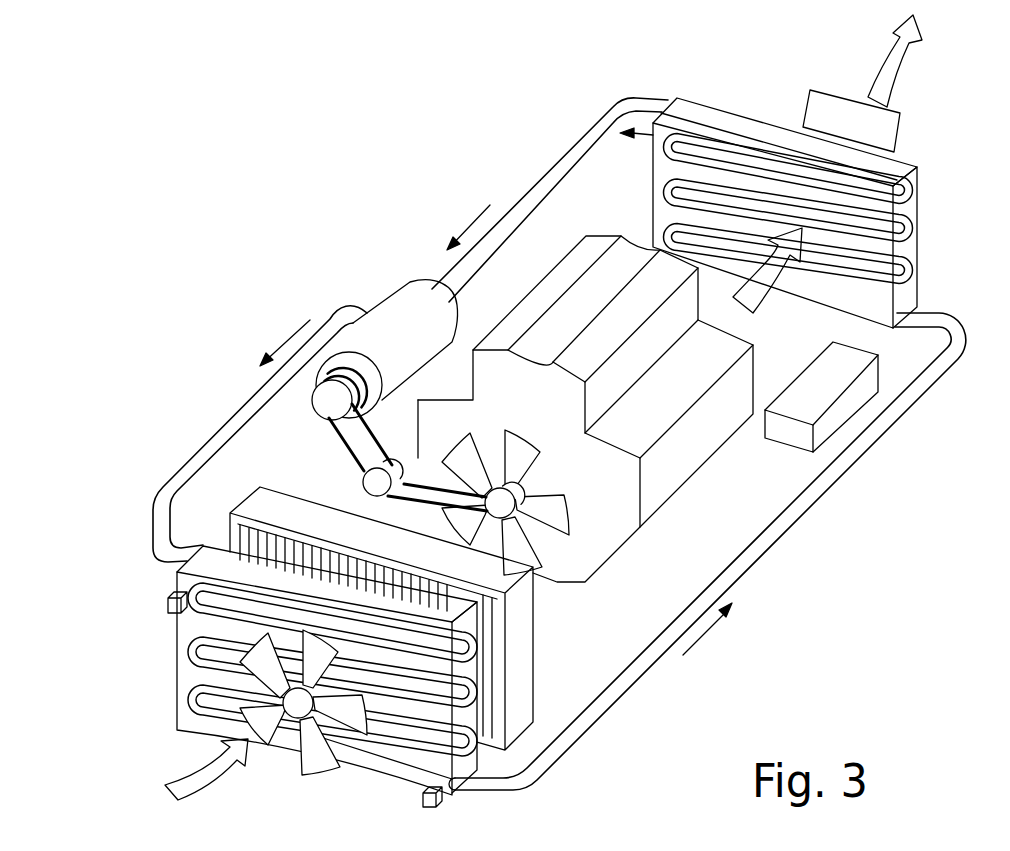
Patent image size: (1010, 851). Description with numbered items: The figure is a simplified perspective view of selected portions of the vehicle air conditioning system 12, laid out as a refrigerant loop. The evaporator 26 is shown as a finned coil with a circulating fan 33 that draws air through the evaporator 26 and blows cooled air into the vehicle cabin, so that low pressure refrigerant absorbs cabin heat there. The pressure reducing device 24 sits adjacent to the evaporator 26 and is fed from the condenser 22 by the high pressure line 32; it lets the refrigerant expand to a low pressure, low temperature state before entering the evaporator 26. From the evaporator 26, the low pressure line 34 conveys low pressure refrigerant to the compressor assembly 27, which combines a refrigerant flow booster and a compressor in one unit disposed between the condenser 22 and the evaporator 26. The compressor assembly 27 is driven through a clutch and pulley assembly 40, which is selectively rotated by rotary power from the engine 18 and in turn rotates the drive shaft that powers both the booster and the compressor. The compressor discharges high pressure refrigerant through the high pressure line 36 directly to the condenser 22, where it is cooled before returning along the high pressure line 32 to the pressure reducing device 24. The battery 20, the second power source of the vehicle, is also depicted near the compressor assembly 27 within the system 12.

The vehicle air conditioning system 12 is at (225, 275).
The engine 18 is at (673, 465).
The battery 20 is at (823, 378).
The condenser 22 is at (178, 657).
The pressure reducing device 24 is at (905, 296).
The evaporator 26 is at (898, 213).
The compressor assembly 27 is at (398, 325).
The high pressure line 32 is at (782, 540).
The circulating fan 33 is at (898, 137).
The low pressure line 34 is at (558, 172).
The high pressure line 36 is at (214, 437).
The clutch and pulley assembly 40 is at (328, 404).